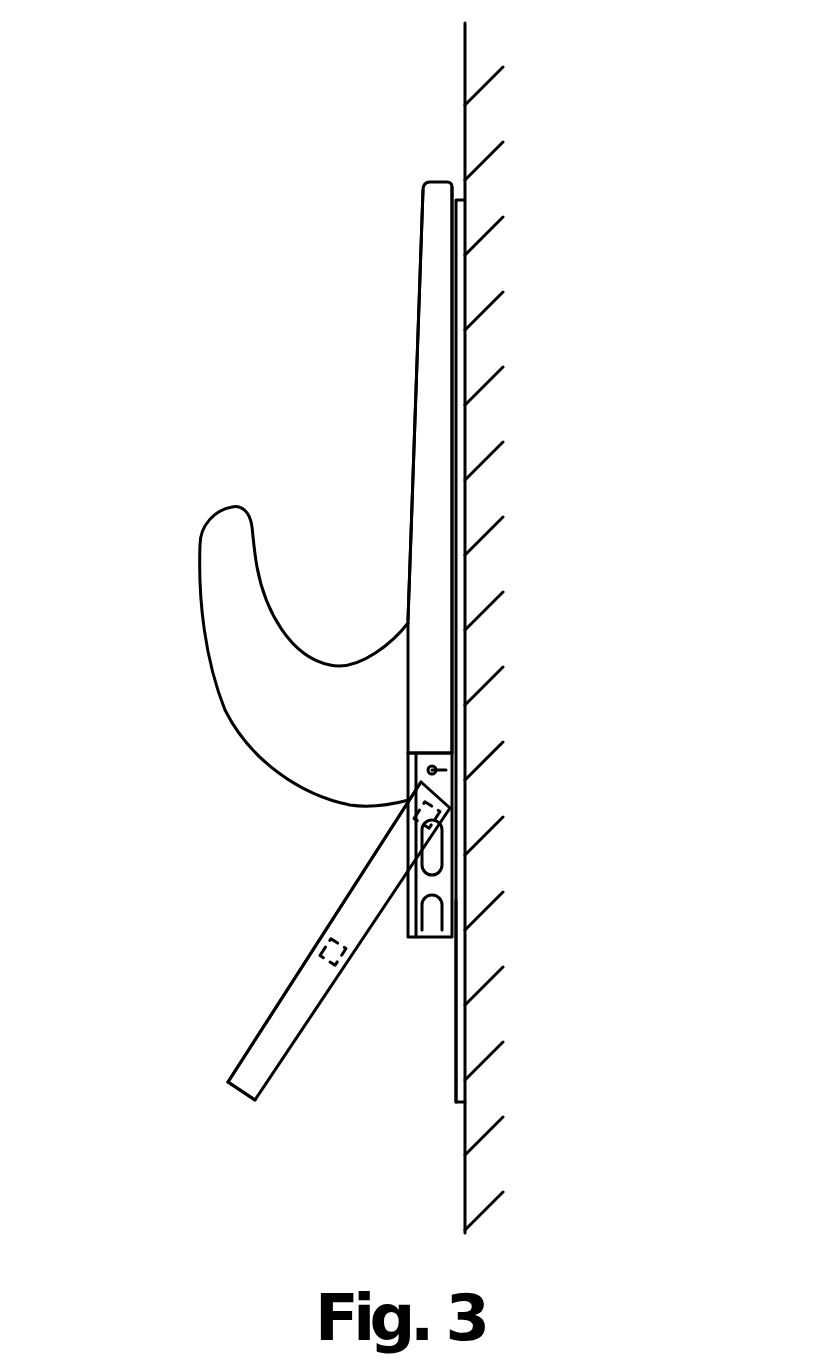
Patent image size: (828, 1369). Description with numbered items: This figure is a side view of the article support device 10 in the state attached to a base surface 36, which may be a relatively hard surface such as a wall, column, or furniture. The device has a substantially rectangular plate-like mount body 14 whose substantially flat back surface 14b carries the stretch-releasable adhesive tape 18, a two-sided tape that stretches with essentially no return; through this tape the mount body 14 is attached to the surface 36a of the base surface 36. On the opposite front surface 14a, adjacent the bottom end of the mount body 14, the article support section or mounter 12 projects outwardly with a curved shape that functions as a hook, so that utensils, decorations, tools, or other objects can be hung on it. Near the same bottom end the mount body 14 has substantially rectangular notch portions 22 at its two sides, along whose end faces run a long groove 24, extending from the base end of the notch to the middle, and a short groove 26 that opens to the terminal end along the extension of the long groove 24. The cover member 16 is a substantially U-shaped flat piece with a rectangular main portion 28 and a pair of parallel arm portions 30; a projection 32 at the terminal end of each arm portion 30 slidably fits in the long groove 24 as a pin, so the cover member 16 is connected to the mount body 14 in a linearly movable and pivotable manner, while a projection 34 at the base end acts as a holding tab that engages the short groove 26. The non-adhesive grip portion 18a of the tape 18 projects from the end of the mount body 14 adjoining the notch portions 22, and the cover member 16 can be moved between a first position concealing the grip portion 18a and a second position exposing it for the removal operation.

The article support device 10 is at (368, 222).
The article support section (mounter) 12 is at (222, 593).
The mount body 14 is at (412, 350).
The front surface of mount body 14a is at (410, 430).
The back surface of mount body 14b is at (457, 438).
The cover member 16 is at (240, 1097).
The stretch-releasable adhesive tape 18 is at (482, 284).
The grip portion 18a is at (455, 1057).
The notch portion 22 is at (450, 883).
The long groove 24 is at (442, 762).
The short groove 26 is at (437, 940).
The main portion 28 is at (248, 1052).
The arm portion 30 is at (362, 895).
The projection (pin) 32 is at (403, 833).
The projection (holding tab) 34 is at (307, 952).
The base surface 36 is at (452, 63).
The surface of base surface 36a is at (457, 120).